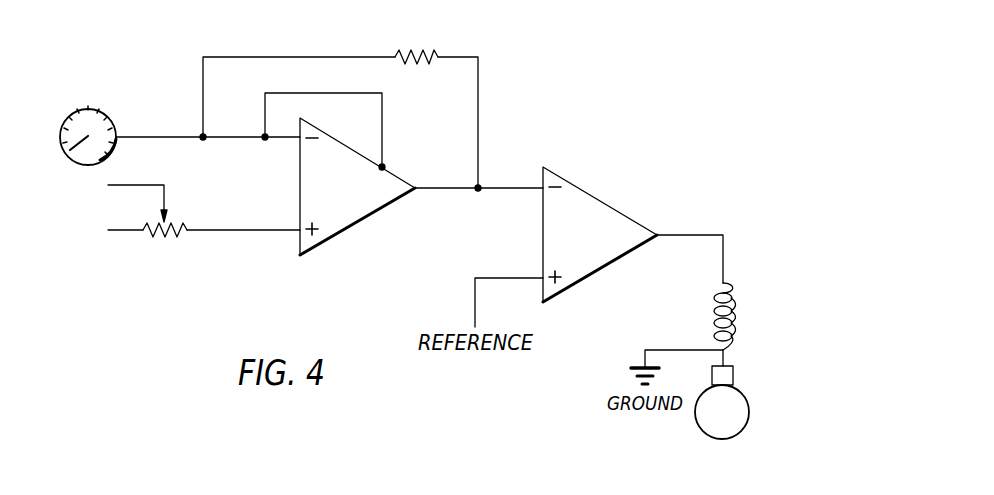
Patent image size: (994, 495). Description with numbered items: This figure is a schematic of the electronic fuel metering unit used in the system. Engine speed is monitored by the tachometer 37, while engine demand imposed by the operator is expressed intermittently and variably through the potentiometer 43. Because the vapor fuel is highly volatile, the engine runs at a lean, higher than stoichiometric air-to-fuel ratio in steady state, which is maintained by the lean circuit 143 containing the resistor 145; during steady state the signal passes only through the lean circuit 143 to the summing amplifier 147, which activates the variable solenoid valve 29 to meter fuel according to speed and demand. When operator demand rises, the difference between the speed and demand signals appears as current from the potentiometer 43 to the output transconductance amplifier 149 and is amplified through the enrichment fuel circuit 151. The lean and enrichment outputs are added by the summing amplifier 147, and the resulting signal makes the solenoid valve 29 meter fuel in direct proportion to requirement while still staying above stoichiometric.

The tachometer 37 is at (107, 109).
The potentiometer 43 is at (185, 236).
The lean circuit 143 is at (295, 56).
The resistor 145 is at (425, 52).
The enrichment fuel circuit 151 is at (383, 111).
The output transconductance amplifier 149 is at (360, 222).
The summing amplifier 147 is at (598, 200).
The solenoid valve 29 is at (738, 388).